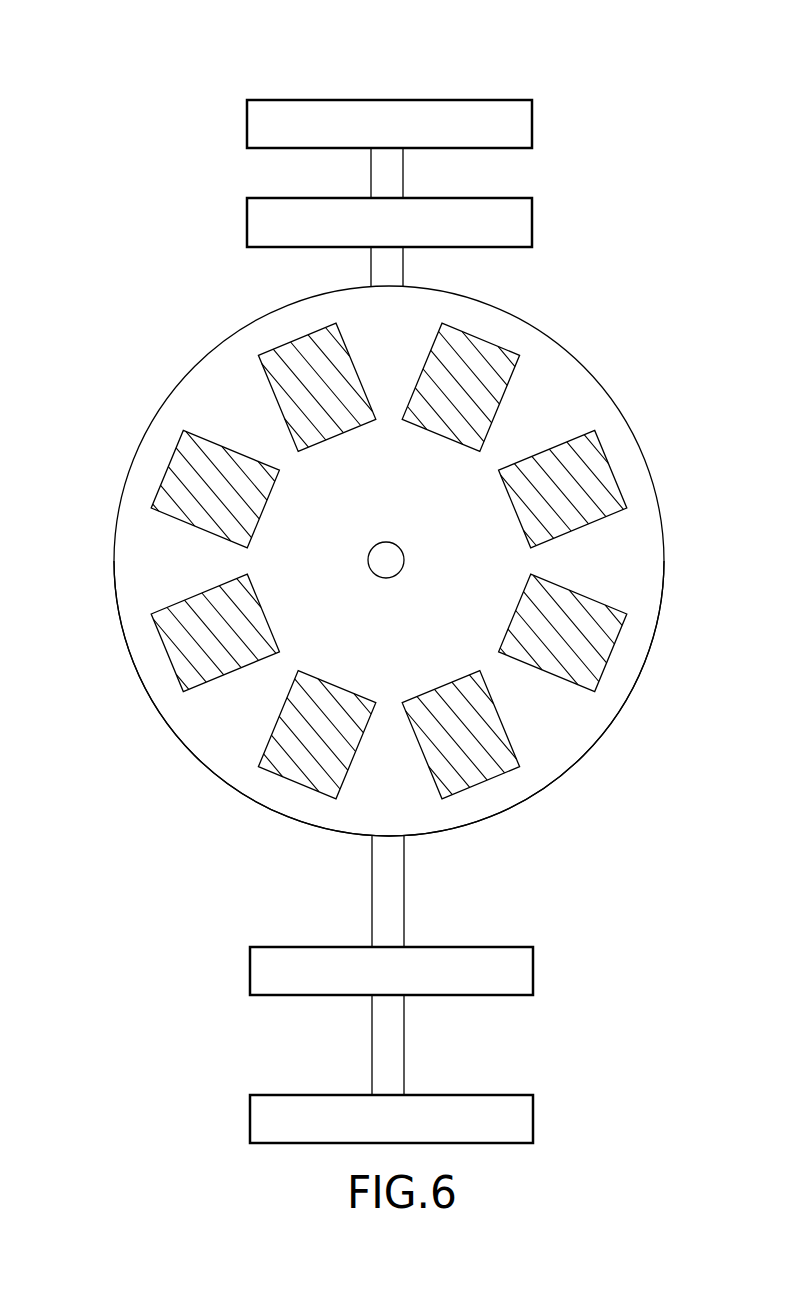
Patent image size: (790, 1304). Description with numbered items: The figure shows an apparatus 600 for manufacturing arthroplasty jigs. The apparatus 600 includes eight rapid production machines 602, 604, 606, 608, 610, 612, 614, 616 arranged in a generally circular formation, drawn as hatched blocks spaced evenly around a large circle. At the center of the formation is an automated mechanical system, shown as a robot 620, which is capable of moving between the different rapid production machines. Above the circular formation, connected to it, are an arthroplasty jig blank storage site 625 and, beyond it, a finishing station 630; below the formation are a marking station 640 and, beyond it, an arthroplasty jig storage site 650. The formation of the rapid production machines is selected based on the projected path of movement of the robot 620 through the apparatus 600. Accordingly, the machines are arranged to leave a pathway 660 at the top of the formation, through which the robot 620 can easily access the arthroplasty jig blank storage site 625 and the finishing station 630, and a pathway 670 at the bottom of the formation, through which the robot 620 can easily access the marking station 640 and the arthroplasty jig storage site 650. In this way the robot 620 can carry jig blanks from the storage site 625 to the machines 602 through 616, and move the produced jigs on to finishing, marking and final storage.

The apparatus 600 is at (116, 100).
The rapid production machine 602 is at (288, 778).
The rapid production machine 604 is at (160, 640).
The rapid production machine 606 is at (160, 483).
The rapid production machine 608 is at (266, 350).
The rapid production machine 610 is at (500, 348).
The rapid production machine 612 is at (602, 452).
The rapid production machine 614 is at (610, 645).
The rapid production machine 616 is at (483, 780).
The robot 620 is at (404, 555).
The arthroplasty jig blank storage site 625 is at (532, 222).
The finishing station 630 is at (532, 120).
The marking station 640 is at (533, 968).
The arthroplasty jig storage site 650 is at (533, 1120).
The pathway 660 is at (403, 344).
The pathway 670 is at (404, 804).